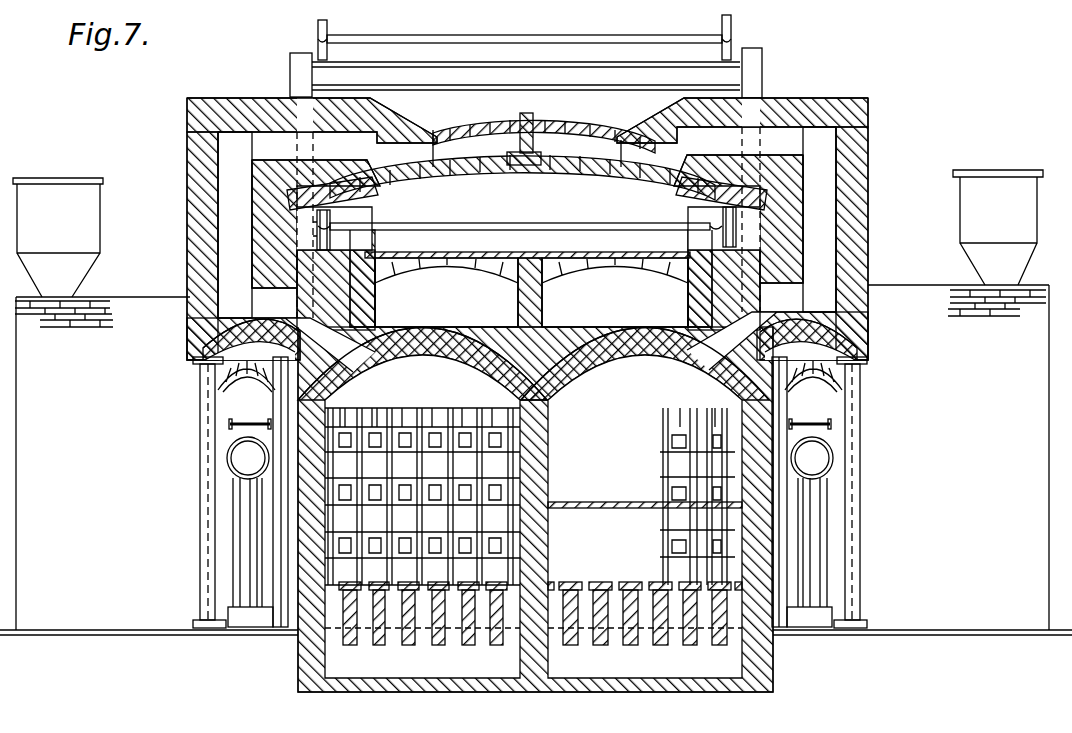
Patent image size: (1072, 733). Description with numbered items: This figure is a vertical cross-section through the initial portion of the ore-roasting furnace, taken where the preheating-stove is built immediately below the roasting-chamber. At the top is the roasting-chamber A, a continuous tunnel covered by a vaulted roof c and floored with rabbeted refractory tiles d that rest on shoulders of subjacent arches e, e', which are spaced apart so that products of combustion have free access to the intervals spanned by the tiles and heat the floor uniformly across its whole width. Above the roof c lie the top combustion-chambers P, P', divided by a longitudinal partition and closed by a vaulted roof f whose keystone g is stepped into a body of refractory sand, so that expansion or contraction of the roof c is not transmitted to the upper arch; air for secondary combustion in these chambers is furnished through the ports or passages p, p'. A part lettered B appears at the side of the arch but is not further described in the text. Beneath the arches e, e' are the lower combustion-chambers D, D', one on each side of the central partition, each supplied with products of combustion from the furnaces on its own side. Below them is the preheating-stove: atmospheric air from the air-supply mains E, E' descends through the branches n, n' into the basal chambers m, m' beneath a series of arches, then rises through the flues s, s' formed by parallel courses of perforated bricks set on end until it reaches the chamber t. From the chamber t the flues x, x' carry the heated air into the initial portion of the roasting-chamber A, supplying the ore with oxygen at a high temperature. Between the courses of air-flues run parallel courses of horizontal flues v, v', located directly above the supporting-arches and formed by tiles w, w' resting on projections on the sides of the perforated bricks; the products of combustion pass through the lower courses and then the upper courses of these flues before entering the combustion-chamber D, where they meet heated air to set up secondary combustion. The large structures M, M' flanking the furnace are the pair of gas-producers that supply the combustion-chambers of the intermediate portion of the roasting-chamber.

The roasting-chamber A is at (530, 207).
The side chamber B is at (396, 220).
The top combustion-chamber P is at (460, 143).
The top combustion-chamber P' is at (584, 141).
The port or passage p is at (392, 154).
The port or passage p' is at (644, 160).
The vaulted roof f is at (470, 127).
The keystone g is at (528, 113).
The vaulted roof c is at (527, 173).
The tiles of refractory material d is at (580, 252).
The combustion-chamber D is at (446, 292).
The combustion-chamber D' is at (615, 292).
The supporting arch e is at (446, 276).
The chamber arch e' is at (615, 274).
The flue x is at (441, 225).
The flue x' is at (584, 256).
The chamber t is at (526, 376).
The air-flue s is at (416, 406).
The air-flue s' is at (668, 403).
The tile w is at (447, 476).
The checker brick wall w' is at (521, 490).
The horizontal flue v is at (453, 476).
The horizontal flue v' is at (678, 496).
The basal chamber m is at (422, 629).
The basal chamber m' is at (645, 627).
The gas-producer M is at (101, 404).
The gas-producer M' is at (958, 400).
The air-supply main E is at (217, 458).
The air-supply main E' is at (845, 454).
The descending branch n is at (222, 552).
The descending branch n' is at (840, 552).